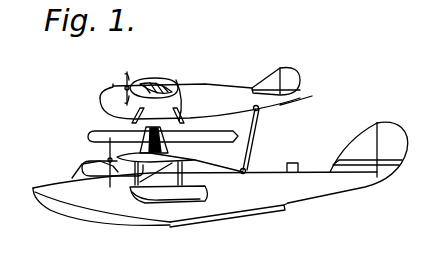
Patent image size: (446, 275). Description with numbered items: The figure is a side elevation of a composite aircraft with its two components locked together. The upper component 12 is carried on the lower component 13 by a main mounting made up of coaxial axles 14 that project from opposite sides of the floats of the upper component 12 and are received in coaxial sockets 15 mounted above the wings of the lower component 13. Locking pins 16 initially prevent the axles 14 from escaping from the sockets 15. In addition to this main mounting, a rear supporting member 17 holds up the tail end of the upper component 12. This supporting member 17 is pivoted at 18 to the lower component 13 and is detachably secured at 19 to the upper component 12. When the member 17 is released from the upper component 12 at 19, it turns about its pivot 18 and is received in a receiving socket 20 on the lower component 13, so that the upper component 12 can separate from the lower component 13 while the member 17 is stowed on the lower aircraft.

The upper component 12 is at (197, 88).
The lower component 13 is at (217, 211).
The coaxial axles 14 is at (110, 145).
The coaxial sockets 15 is at (177, 80).
The locking pins 16 is at (107, 123).
The rear supporting member 17 is at (250, 140).
The pivot 18 is at (245, 175).
The detachable securing point 19 is at (308, 96).
The receiving socket 20 is at (295, 163).